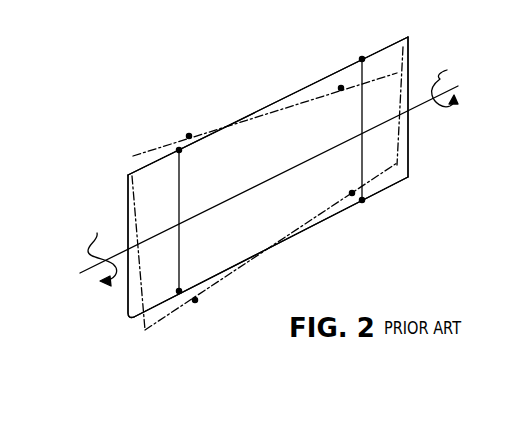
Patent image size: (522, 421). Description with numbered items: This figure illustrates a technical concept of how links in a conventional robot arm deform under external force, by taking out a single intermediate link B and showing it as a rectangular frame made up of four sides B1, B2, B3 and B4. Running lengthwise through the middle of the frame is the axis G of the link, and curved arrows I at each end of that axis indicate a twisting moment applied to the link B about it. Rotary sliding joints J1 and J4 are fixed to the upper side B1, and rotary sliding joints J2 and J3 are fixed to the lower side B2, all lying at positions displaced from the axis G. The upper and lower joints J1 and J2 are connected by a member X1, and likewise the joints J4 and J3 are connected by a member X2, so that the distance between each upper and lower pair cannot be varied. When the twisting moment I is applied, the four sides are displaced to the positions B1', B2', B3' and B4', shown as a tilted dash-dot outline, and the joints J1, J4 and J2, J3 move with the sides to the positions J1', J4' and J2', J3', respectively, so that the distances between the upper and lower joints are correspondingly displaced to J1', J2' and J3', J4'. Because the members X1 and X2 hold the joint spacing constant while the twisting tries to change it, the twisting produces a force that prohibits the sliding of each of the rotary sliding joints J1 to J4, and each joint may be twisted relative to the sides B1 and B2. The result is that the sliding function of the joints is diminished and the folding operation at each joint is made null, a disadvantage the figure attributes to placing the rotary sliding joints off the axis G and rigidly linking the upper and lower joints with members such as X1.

The intermediate link B is at (385, 207).
The side of link B B1 is at (268, 93).
The side of link B B2 is at (271, 247).
The side of link B B3 is at (431, 107).
The side of link B B4 is at (105, 248).
The displaced position of side B1 B1' is at (264, 114).
The displaced position of side B2 B2' is at (271, 259).
The displaced position of side B3 B3' is at (426, 95).
The displaced position of side B4 B4' is at (111, 250).
The rotary sliding joint J1 is at (199, 162).
The rotary sliding joint J2 is at (192, 267).
The rotary sliding joint J3 is at (369, 224).
The rotary sliding joint J4 is at (345, 46).
The displaced position of joint J1 J1' is at (190, 115).
The displaced position of joint J2 J2' is at (218, 306).
The displaced position of joint J3 J3' is at (328, 185).
The displaced position of joint J4 J4' is at (321, 112).
The connecting member X1 is at (181, 194).
The connecting member X2 is at (363, 106).
The axis of the link G is at (238, 196).
The twisting moment arrow I is at (97, 233).